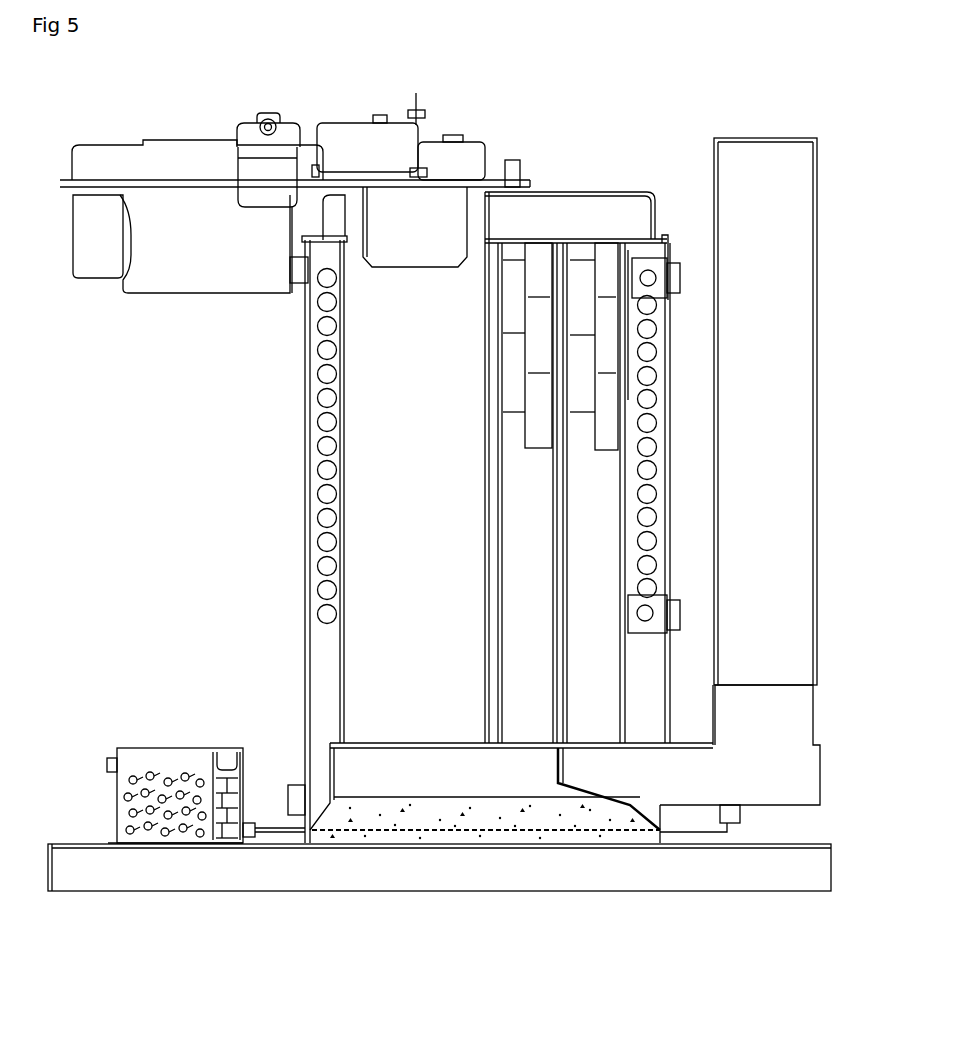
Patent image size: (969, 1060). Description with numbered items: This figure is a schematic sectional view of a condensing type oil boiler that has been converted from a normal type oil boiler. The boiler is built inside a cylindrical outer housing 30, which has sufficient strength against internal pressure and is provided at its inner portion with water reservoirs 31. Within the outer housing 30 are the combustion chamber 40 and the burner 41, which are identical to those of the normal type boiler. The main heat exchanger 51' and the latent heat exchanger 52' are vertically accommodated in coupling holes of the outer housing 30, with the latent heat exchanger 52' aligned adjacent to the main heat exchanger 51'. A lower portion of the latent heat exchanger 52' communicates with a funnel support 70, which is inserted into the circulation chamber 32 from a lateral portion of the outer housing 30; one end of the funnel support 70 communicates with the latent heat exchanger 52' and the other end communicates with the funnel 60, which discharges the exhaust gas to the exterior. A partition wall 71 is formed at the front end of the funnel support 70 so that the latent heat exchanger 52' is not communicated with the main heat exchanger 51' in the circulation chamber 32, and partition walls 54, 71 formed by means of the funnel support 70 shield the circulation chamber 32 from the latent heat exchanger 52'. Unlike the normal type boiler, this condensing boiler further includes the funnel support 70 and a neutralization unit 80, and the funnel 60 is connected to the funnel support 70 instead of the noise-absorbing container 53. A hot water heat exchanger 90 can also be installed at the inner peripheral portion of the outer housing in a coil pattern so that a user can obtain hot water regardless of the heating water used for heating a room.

The outer housing 30 is at (297, 435).
The water reservoirs 31 is at (630, 667).
The circulation chamber 32 is at (363, 775).
The combustion chamber 40 is at (343, 363).
The burner 41 is at (407, 262).
The main heat exchanger 51' is at (614, 404).
The latent heat exchanger 52' is at (654, 252).
The noise-absorbing container 53 is at (547, 191).
The partition wall 54 is at (607, 373).
The funnel 60 is at (820, 482).
The funnel support 70 is at (820, 762).
The partition wall 71 is at (553, 773).
The neutralization unit 80 is at (163, 750).
The hot water heat exchanger 90 is at (660, 445).